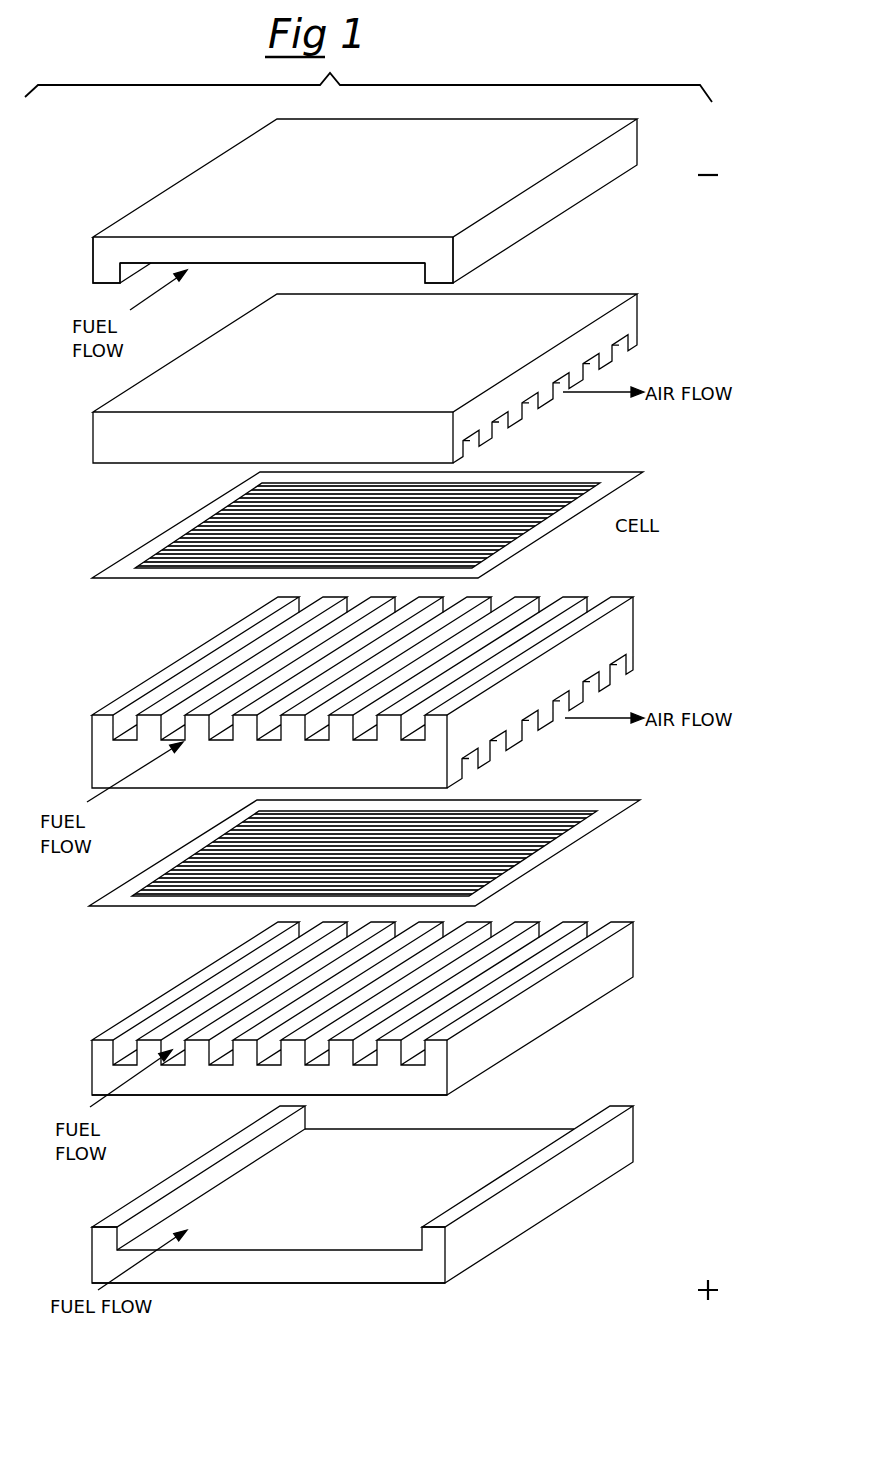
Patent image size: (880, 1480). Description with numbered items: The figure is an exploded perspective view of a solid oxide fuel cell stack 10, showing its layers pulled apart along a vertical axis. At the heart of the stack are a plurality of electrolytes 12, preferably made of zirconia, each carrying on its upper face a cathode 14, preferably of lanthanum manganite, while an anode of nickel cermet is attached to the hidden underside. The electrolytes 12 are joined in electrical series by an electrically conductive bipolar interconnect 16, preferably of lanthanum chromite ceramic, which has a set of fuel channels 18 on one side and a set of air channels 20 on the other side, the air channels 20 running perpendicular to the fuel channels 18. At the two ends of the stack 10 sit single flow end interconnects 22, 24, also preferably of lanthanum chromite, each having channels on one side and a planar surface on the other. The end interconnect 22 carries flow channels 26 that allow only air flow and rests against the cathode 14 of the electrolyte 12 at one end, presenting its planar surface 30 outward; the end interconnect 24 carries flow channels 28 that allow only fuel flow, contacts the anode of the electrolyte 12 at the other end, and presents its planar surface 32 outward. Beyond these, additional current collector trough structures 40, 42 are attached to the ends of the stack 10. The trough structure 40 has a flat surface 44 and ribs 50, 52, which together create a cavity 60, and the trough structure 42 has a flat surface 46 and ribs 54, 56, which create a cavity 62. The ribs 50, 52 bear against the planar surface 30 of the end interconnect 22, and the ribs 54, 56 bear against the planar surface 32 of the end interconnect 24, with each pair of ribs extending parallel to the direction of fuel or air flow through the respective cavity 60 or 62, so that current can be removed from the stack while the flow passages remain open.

The fuel cell stack 10 is at (728, 237).
The electrolyte 12 is at (638, 478).
The cathode 14 is at (555, 495).
The bipolar interconnect 16 is at (386, 692).
The fuel channels 18 is at (138, 707).
The air channels 20 is at (485, 760).
The single flow end interconnect 22 is at (393, 357).
The single flow end interconnect 24 is at (392, 1019).
The flow channels 26 is at (632, 332).
The flow channels 28 is at (400, 1047).
The planar surface 30 is at (381, 363).
The planar surface 32 is at (428, 1097).
The current collector trough structure 40 is at (218, 163).
The current collector trough structure 42 is at (335, 1214).
The flat surface 44 is at (366, 185).
The flat surface 46 is at (330, 1282).
The rib 50 is at (100, 272).
The rib 52 is at (440, 274).
The rib 54 is at (113, 1218).
The rib 56 is at (455, 1213).
The cavity 60 is at (272, 268).
The cavity 62 is at (380, 1240).